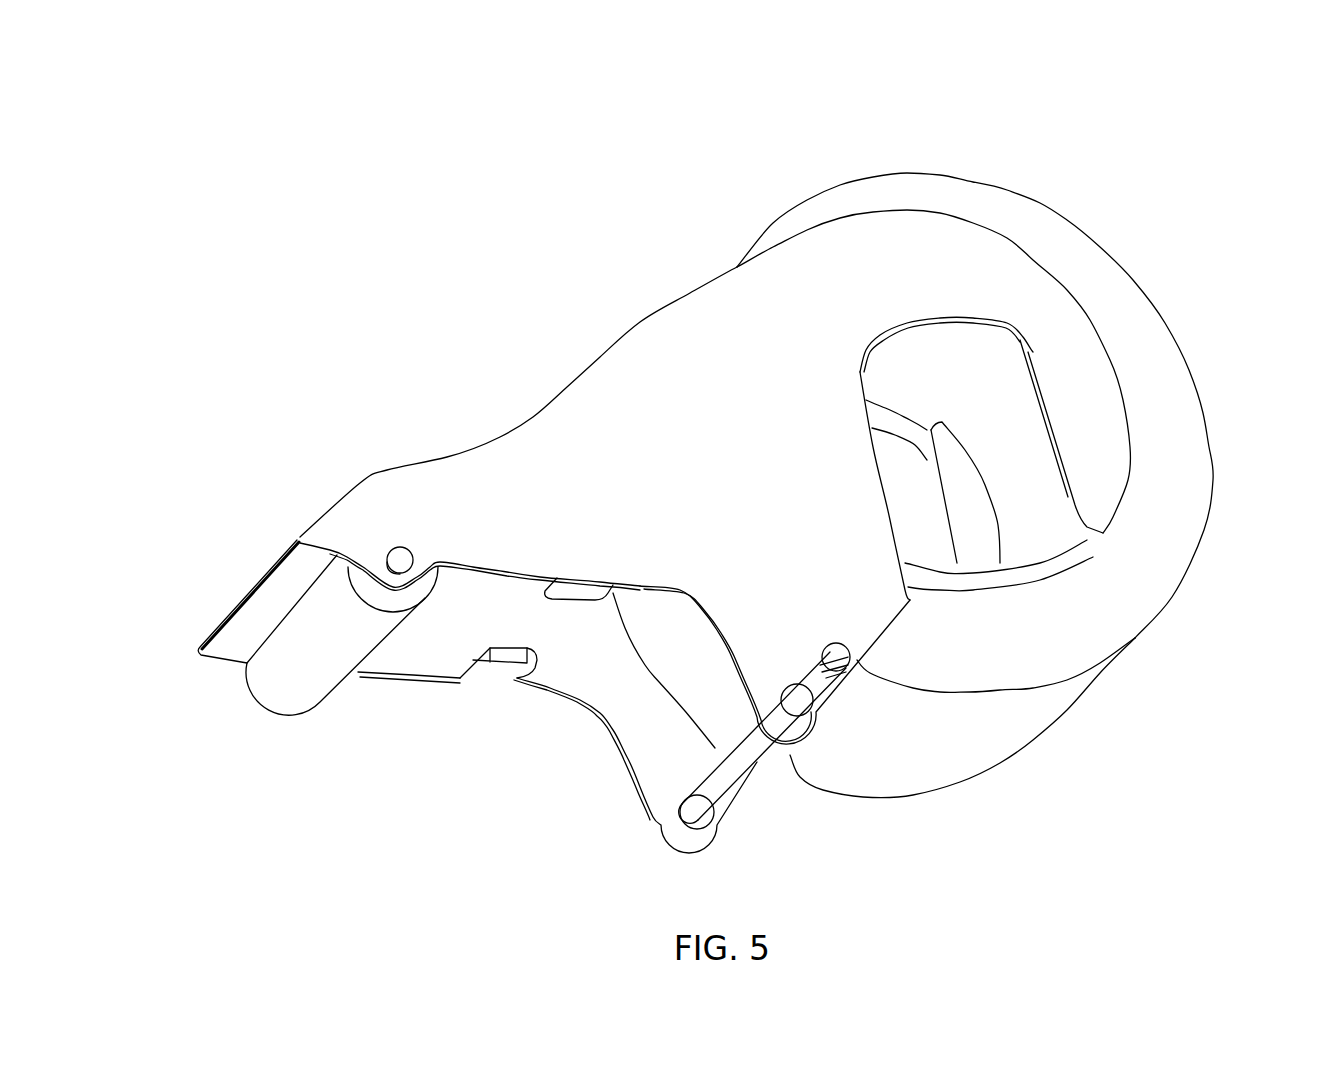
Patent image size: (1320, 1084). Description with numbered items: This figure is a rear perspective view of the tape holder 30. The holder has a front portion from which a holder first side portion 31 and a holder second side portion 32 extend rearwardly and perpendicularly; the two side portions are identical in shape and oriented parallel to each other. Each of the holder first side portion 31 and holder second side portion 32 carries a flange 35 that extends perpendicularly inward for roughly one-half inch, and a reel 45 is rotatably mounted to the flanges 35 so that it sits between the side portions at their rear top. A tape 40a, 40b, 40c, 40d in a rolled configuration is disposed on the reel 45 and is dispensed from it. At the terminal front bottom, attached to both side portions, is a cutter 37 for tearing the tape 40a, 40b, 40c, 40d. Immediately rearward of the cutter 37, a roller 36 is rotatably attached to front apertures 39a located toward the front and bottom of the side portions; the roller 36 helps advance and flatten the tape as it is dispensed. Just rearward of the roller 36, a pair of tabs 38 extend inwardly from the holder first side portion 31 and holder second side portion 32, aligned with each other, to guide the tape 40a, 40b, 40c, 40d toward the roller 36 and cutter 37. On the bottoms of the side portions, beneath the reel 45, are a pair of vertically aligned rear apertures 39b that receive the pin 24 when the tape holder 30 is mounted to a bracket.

The tape holder 30 is at (375, 209).
The holder first side portion 31 is at (887, 268).
The pin 24 is at (820, 692).
The holder second side portion 32 is at (453, 640).
The flange 35 is at (970, 498).
The roller 36 is at (305, 690).
The cutter 37 is at (236, 600).
The tabs 38 is at (513, 680).
The front apertures 39a is at (397, 553).
The rear apertures 39b is at (690, 828).
The tape 40a is at (1107, 211).
The tape 40b is at (962, 718).
The tape 40c is at (1075, 321).
The tape 40d is at (1000, 574).
The reel 45 is at (972, 398).